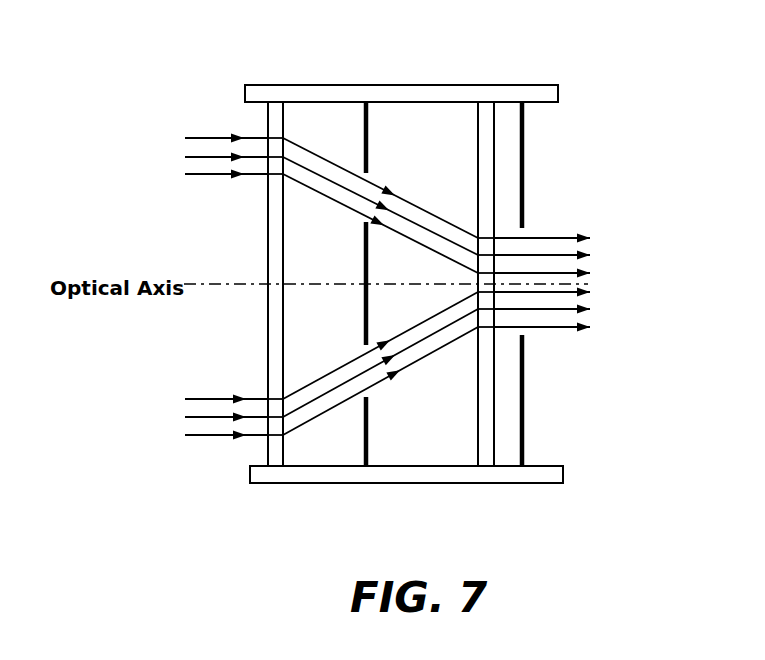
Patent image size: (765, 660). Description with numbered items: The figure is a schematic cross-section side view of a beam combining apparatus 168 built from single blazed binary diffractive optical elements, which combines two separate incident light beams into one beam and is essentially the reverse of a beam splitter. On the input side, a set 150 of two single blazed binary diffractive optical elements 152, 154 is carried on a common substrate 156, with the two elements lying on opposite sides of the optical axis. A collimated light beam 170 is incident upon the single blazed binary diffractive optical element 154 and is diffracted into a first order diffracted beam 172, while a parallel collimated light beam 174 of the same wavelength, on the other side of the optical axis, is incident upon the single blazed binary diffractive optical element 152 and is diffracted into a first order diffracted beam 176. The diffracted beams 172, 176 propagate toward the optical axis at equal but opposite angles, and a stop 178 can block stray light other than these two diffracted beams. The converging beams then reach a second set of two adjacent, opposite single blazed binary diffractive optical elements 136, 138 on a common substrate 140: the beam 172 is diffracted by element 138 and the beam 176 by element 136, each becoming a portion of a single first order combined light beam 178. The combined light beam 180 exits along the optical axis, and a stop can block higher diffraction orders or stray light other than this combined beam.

The beam combining apparatus 168 is at (422, 38).
The set of two single blazed binary diffractive optical elements 150 is at (250, 122).
The common substrate 156 is at (281, 458).
The single blazed binary diffractive optical element 154 is at (291, 238).
The single blazed binary diffractive optical element 152 is at (292, 315).
The collimated light beam 170 is at (175, 132).
The first order diffracted beam 172 is at (320, 191).
The collimated light beam 174 is at (180, 393).
The first order diffracted beam 176 is at (323, 375).
The combined light beam 178 is at (366, 452).
The single blazed binary diffractive optical element 138 is at (464, 143).
The single blazed binary diffractive optical element 136 is at (464, 370).
The common substrate 140 is at (489, 450).
The diffracted combined light beam 180 is at (526, 450).